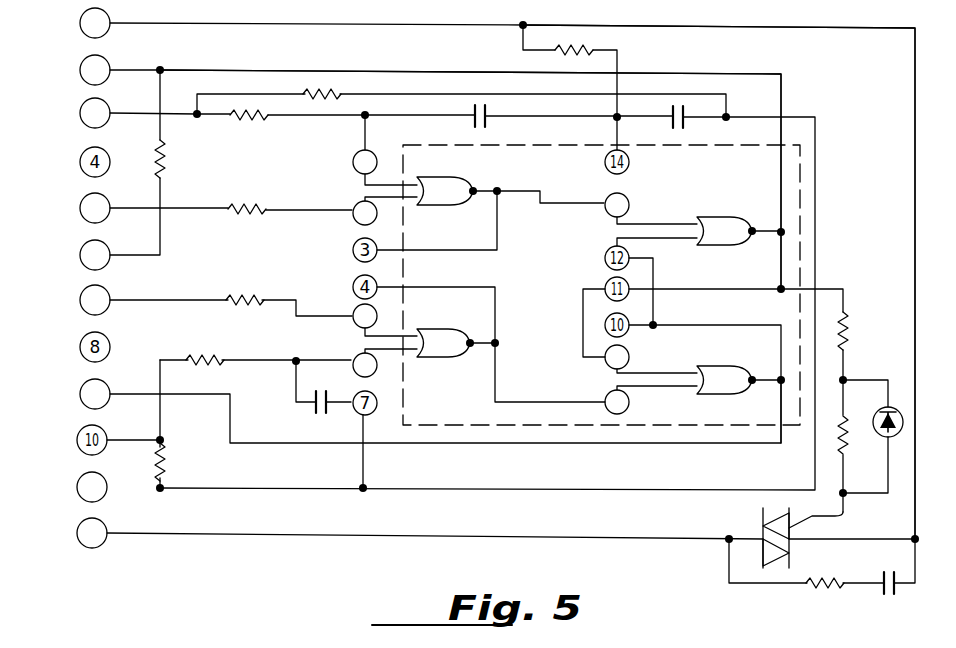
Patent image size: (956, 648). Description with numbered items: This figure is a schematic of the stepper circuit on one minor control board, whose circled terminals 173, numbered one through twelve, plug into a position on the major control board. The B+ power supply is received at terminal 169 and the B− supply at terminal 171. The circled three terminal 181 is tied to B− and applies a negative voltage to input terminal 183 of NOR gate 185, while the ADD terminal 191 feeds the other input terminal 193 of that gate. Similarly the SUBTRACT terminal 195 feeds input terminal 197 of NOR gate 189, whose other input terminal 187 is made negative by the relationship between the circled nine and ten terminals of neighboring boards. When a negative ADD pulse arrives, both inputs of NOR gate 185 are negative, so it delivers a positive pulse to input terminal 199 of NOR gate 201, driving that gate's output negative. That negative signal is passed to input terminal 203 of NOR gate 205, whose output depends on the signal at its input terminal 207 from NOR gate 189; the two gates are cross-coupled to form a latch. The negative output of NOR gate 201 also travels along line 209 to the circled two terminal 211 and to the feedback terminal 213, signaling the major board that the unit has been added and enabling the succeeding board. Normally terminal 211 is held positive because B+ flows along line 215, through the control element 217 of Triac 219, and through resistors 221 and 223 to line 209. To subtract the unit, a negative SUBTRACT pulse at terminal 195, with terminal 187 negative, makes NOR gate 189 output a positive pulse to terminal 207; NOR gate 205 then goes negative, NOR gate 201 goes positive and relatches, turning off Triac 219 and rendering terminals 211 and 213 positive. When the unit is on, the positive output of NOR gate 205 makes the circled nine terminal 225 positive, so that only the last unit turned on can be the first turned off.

The B+ power supply terminal 169 is at (80, 23).
The circled 2 terminal 211 is at (80, 76).
The circled 3 terminal 181 is at (88, 129).
The ADD terminal 191 is at (80, 202).
The feedback circuit terminal 213 is at (82, 248).
The SUBTRACT terminal 195 is at (81, 294).
The circled 9 terminal 225 is at (80, 388).
The B− power supply terminal 171 is at (80, 478).
The circled terminals 173 is at (89, 549).
The input terminal of NOR gate 185 183 is at (355, 156).
The input terminal of NOR gate 185 193 is at (352, 221).
The input terminal of NOR gate 189 197 is at (353, 322).
The input terminal of NOR gate 189 187 is at (378, 368).
The NOR gate 185 is at (450, 186).
The NOR gate 189 is at (457, 319).
The input terminal of NOR gate 201 199 is at (630, 200).
The NOR gate 201 is at (722, 218).
The input terminal of NOR gate 205 203 is at (632, 358).
The NOR gate 205 is at (716, 370).
The input terminal of NOR gate 205 207 is at (632, 402).
The line 209 is at (783, 97).
The line 215 is at (913, 217).
The resistor 223 is at (848, 325).
The resistor 221 is at (848, 440).
The control element of Triac 217 is at (808, 519).
The Triac 219 is at (757, 525).